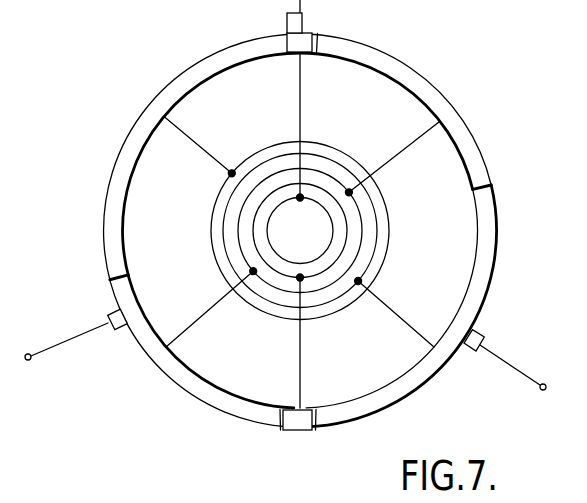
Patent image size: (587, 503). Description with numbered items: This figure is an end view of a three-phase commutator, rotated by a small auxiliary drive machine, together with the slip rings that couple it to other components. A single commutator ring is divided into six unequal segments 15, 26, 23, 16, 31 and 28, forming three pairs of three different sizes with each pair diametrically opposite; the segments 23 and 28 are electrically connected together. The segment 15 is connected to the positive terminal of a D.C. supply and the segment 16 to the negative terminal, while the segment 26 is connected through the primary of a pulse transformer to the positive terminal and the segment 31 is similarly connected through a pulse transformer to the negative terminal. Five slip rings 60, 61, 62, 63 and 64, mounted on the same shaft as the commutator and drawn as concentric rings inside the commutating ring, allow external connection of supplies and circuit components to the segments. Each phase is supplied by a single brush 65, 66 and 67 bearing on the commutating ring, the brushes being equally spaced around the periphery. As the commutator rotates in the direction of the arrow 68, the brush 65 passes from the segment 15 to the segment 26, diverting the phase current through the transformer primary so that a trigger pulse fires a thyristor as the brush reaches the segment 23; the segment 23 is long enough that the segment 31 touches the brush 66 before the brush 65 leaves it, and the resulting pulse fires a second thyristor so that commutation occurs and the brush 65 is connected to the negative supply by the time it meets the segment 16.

The commutator segment 15 is at (191, 68).
The commutator segment 16 is at (485, 284).
The commutator segment 23 is at (483, 152).
The commutator segment 26 is at (312, 33).
The commutator segment 28 is at (164, 376).
The commutator segment 31 is at (300, 430).
The slip ring 60 is at (389, 231).
The slip ring 61 is at (373, 263).
The slip ring 62 is at (313, 287).
The slip ring 63 is at (278, 273).
The slip ring 64 is at (277, 202).
The brush 65 is at (288, 23).
The brush 66 is at (472, 352).
The brush 67 is at (106, 313).
The arrow 68 is at (94, 166).